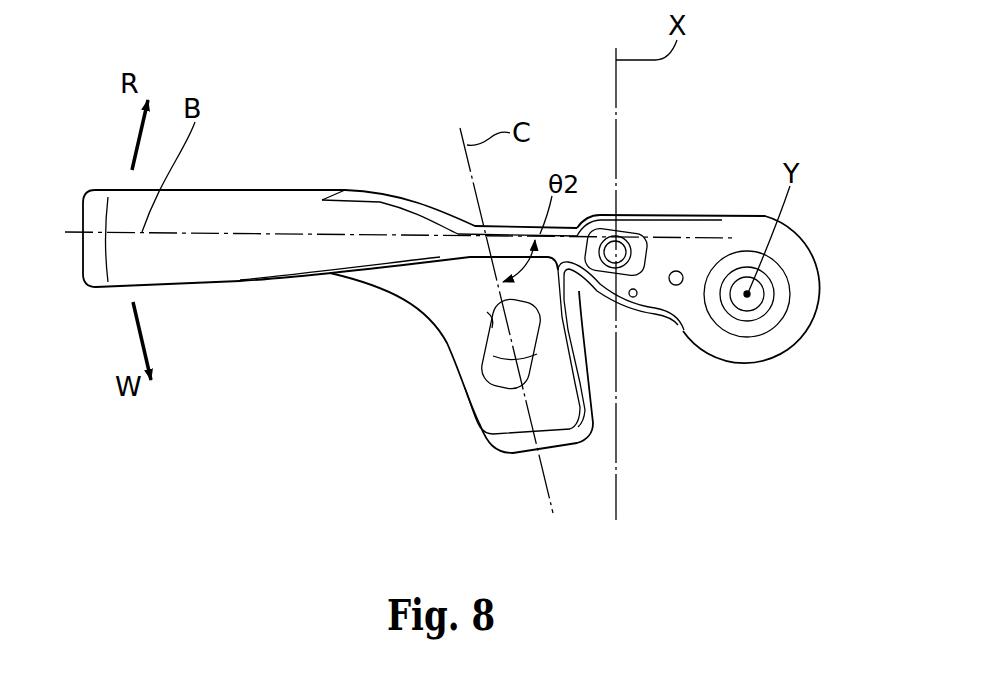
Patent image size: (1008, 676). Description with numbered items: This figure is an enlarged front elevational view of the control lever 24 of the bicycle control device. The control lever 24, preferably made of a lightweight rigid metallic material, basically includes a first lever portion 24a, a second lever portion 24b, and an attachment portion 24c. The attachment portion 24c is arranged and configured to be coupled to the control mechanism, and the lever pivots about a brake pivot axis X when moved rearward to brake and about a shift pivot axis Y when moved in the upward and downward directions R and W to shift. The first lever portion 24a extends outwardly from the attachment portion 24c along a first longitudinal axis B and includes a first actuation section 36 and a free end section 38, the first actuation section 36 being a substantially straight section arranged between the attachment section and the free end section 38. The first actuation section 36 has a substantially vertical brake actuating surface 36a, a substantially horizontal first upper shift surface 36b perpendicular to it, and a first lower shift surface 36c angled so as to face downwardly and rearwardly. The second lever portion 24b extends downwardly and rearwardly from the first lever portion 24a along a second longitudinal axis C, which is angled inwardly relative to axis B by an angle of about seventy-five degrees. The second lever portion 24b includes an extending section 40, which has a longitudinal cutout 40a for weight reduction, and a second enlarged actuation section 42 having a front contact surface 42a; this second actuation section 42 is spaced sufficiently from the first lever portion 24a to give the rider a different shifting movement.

The control lever 24 is at (718, 108).
The first lever portion 24a is at (224, 186).
The second lever portion 24b is at (442, 373).
The attachment portion 24c is at (777, 370).
The first actuation section 36 is at (348, 187).
The brake actuating surface 36a is at (262, 224).
The first upper shift surface 36b is at (247, 189).
The first lower shift surface 36c is at (252, 274).
The free end section 38 is at (103, 186).
The extending section 40 is at (442, 345).
The longitudinal cutout 40a is at (480, 310).
The second actuation section 42 is at (468, 422).
The front contact surface 42a is at (513, 425).